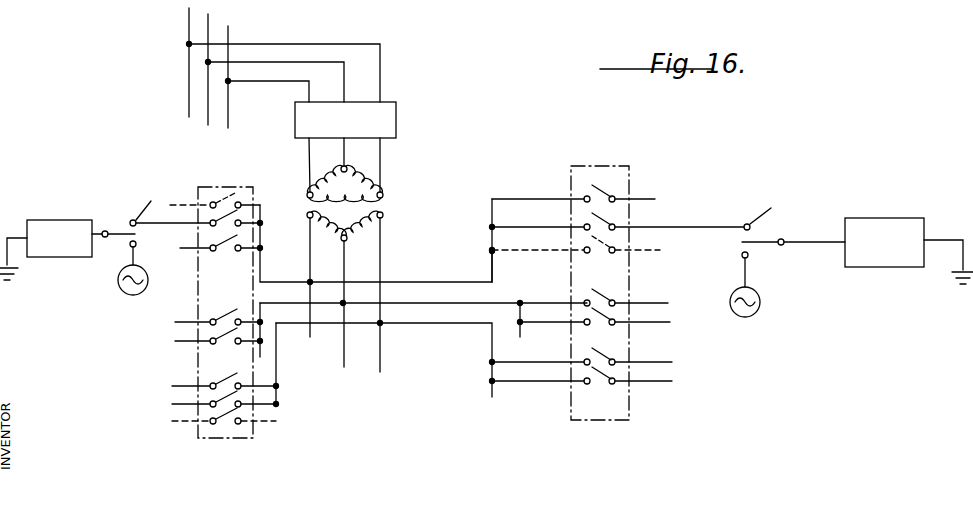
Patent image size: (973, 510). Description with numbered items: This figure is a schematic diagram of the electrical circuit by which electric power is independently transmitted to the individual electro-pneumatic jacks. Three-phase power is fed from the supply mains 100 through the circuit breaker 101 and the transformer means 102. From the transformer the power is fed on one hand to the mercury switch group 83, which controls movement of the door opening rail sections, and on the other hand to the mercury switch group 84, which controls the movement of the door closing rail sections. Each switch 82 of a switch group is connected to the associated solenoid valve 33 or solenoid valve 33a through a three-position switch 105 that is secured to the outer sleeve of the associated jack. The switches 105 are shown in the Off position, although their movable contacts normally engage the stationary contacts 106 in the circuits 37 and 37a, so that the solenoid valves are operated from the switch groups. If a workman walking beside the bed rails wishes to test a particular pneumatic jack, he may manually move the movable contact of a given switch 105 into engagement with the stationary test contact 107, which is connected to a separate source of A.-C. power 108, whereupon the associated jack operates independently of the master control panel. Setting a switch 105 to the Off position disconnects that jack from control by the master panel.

The supply mains 100 is at (189, 73).
The circuit breaker 101 is at (390, 118).
The transformer means 102 is at (368, 206).
The mercury switch group 84 is at (238, 180).
The mercury switch group 83 is at (622, 152).
The switch 82 is at (227, 250).
The solenoid valve 33 is at (45, 211).
The solenoid valve 33a is at (897, 218).
The three-position switch 105 is at (118, 231).
The stationary contact 106 is at (462, 204).
The test contact 107 is at (129, 247).
The source of A.-C. power 108 is at (123, 291).
The circuit 37 is at (173, 222).
The circuit 37a is at (719, 214).